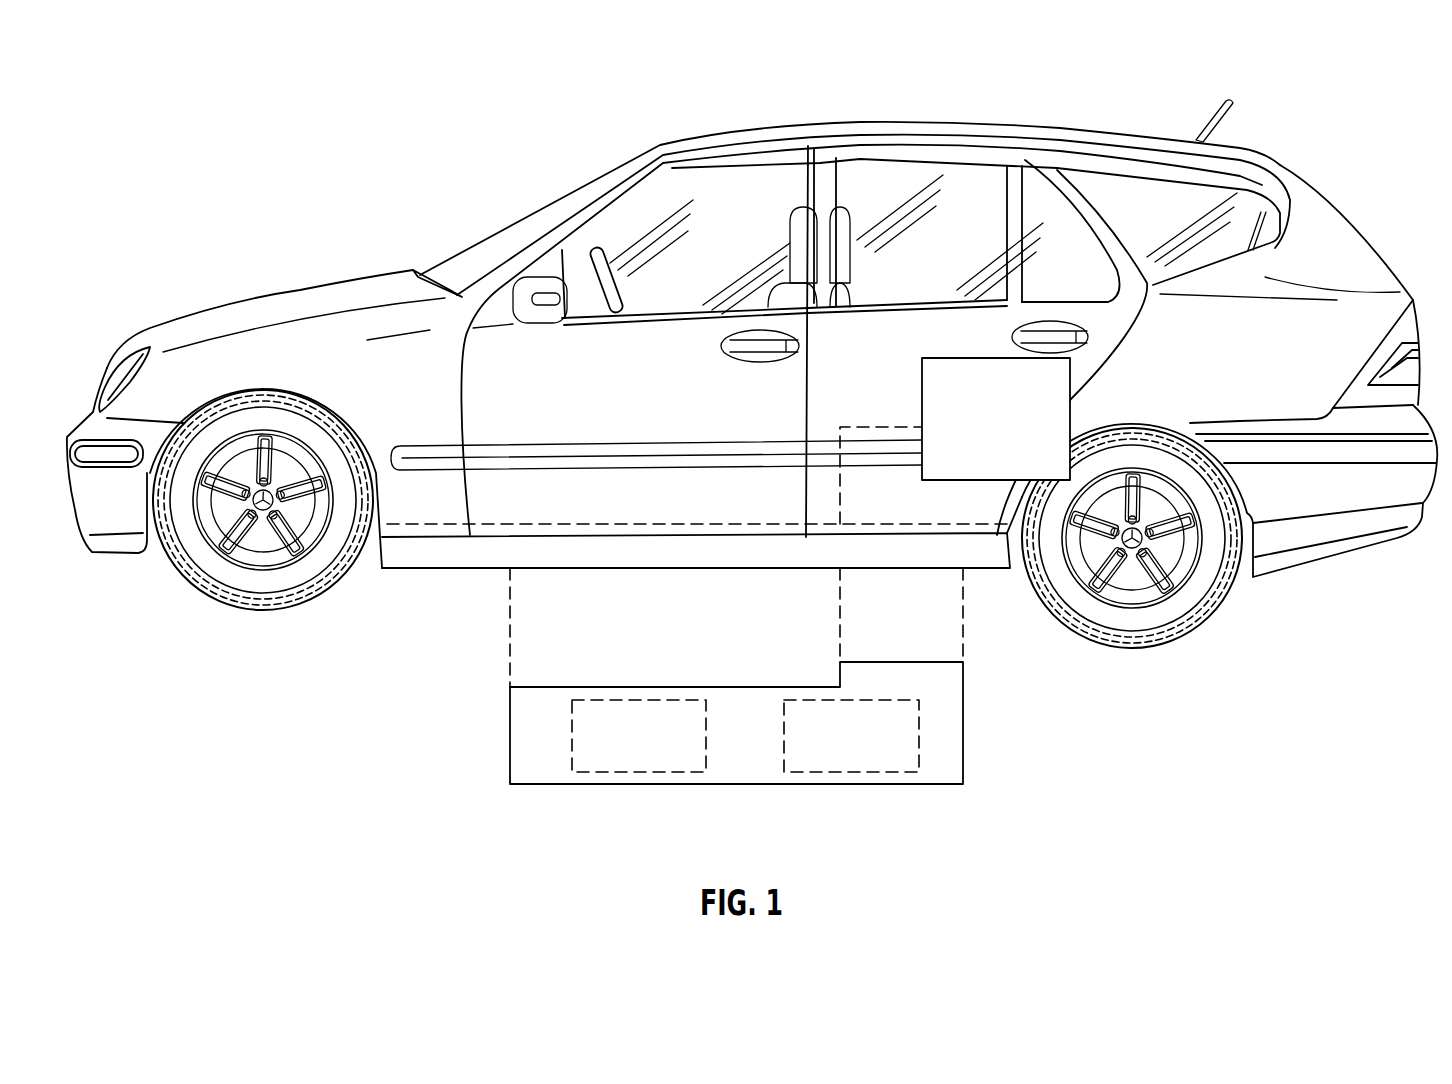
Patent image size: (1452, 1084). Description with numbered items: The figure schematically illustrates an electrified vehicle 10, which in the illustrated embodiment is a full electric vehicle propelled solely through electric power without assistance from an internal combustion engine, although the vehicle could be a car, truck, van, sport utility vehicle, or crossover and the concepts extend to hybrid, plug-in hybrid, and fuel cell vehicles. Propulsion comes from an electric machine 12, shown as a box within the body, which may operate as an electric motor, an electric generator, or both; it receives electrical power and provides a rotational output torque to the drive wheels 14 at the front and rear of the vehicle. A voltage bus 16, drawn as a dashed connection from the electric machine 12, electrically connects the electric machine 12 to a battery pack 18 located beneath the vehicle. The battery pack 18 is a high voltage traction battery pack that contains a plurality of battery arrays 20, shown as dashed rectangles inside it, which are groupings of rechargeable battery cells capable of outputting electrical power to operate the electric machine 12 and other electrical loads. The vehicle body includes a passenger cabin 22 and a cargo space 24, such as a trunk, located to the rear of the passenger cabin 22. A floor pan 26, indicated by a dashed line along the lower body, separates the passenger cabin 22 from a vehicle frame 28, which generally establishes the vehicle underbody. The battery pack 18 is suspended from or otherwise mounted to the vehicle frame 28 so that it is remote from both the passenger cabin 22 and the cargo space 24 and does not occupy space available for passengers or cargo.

The electrified vehicle 10 is at (752, 330).
The electric machine 12 is at (1011, 433).
The drive wheels 14 is at (281, 600).
The voltage bus 16 is at (892, 425).
The battery pack 18 is at (760, 792).
The battery arrays 20 is at (612, 752).
The passenger cabin 22 is at (730, 197).
The cargo space 24 is at (1342, 220).
The floor pan 26 is at (568, 522).
The vehicle frame 28 is at (709, 557).